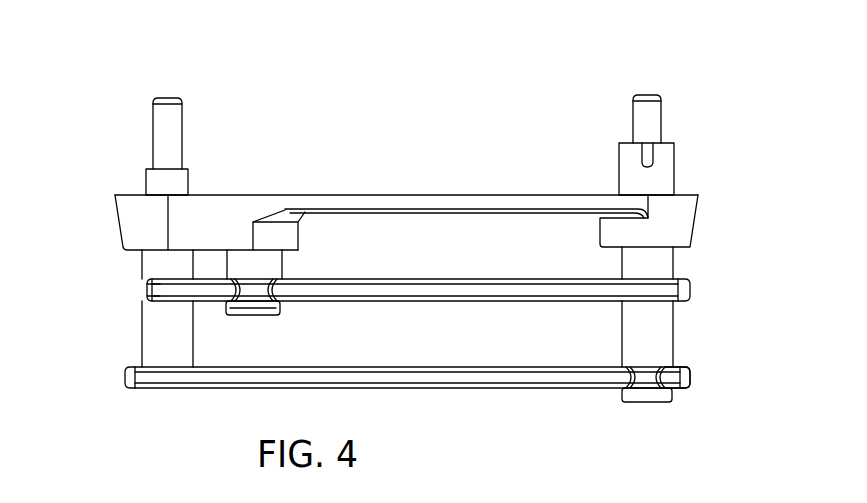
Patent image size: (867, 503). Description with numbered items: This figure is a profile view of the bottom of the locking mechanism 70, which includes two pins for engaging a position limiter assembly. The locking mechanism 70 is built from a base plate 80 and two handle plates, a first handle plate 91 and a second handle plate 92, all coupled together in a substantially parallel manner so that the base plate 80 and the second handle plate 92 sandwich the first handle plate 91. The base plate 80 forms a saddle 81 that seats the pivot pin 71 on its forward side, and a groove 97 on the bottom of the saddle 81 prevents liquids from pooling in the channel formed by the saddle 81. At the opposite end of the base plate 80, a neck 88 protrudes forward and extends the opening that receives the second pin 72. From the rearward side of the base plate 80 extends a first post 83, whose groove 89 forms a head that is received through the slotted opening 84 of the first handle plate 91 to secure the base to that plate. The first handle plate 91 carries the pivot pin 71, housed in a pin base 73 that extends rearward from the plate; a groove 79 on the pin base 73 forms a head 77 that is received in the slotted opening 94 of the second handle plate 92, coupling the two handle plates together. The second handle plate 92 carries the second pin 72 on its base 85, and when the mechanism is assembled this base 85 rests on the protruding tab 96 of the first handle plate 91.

The locking mechanism 70 is at (370, 95).
The pivot pin 71 is at (661, 100).
The second pin 72 is at (183, 111).
The pin base 73 is at (620, 263).
The head 77 is at (638, 402).
The groove 79 is at (670, 390).
The base plate 80 is at (468, 196).
The saddle 81 is at (677, 163).
The first post 83 is at (282, 305).
The slotted opening 84 is at (282, 282).
The base of the second pin 85 is at (155, 333).
The neck 88 is at (188, 178).
The groove 89 is at (227, 308).
The first handle plate 91 is at (403, 285).
The second handle plate 92 is at (417, 378).
The slotted opening 94 is at (628, 385).
The protruding tab 96 is at (153, 283).
The groove 97 is at (648, 160).